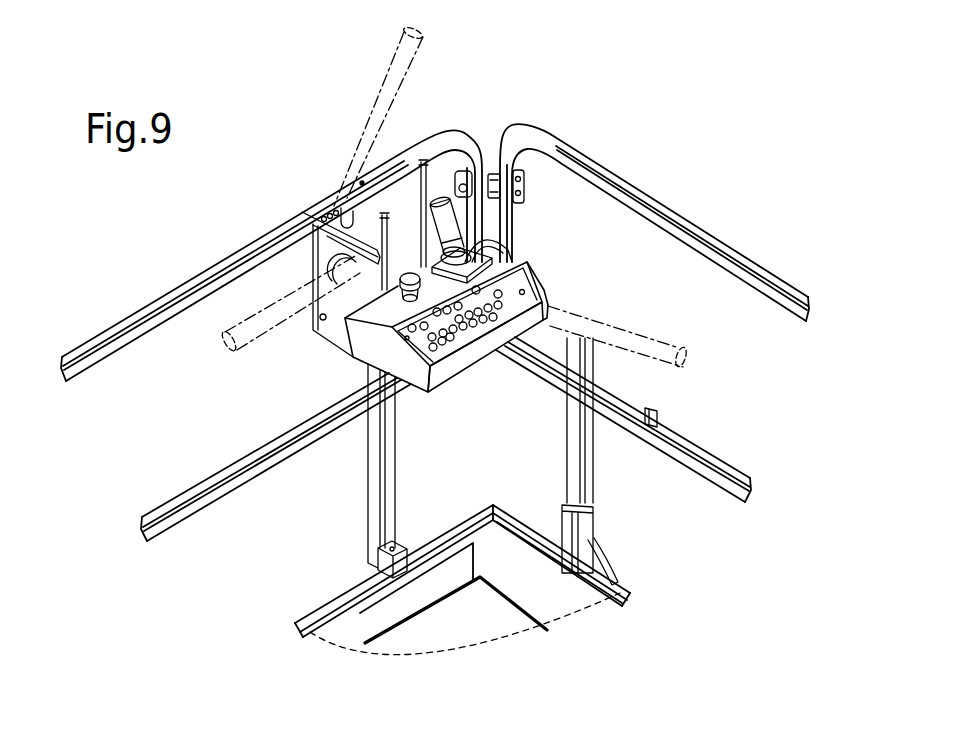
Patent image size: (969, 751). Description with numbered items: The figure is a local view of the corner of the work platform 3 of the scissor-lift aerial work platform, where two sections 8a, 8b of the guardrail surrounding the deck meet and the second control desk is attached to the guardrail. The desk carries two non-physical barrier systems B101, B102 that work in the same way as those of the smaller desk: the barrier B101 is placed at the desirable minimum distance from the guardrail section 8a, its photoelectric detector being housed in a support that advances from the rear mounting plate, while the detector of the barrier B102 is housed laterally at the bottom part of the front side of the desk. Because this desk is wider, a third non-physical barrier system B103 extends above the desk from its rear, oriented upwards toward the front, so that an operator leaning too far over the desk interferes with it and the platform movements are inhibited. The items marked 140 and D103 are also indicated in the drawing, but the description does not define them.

The work platform 3 is at (687, 527).
The guardrail section 8a is at (200, 276).
The guardrail section 8b is at (696, 221).
The mounting hole 140 is at (320, 323).
The non-physical barrier system B101 is at (253, 333).
The non-physical barrier system B102 is at (652, 341).
The third non-physical barrier system B103 is at (382, 89).
The mounting bracket holes D103 is at (334, 206).